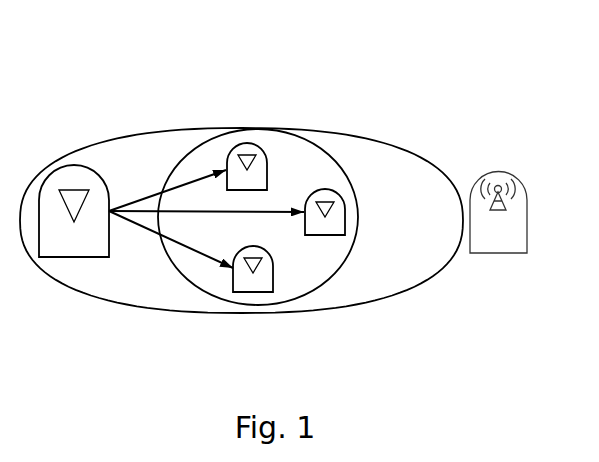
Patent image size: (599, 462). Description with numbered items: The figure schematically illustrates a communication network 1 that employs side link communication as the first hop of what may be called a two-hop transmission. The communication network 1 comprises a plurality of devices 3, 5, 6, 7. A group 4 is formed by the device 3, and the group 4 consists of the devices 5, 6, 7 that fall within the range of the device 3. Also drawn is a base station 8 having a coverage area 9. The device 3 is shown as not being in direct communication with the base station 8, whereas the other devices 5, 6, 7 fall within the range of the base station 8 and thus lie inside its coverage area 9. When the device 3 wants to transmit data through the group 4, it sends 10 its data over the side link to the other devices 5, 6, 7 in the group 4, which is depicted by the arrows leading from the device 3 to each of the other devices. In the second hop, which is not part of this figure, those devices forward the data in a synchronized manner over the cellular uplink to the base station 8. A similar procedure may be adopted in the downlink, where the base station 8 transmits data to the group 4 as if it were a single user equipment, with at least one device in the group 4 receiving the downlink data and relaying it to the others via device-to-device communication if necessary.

The communication network 1 is at (387, 62).
The device 3 is at (86, 165).
The group 4 is at (157, 130).
The device 5 is at (254, 143).
The device 6 is at (257, 293).
The device 7 is at (322, 188).
The base station 8 is at (497, 165).
The coverage area 9 is at (407, 140).
The sending of data over the side link 10 is at (150, 238).